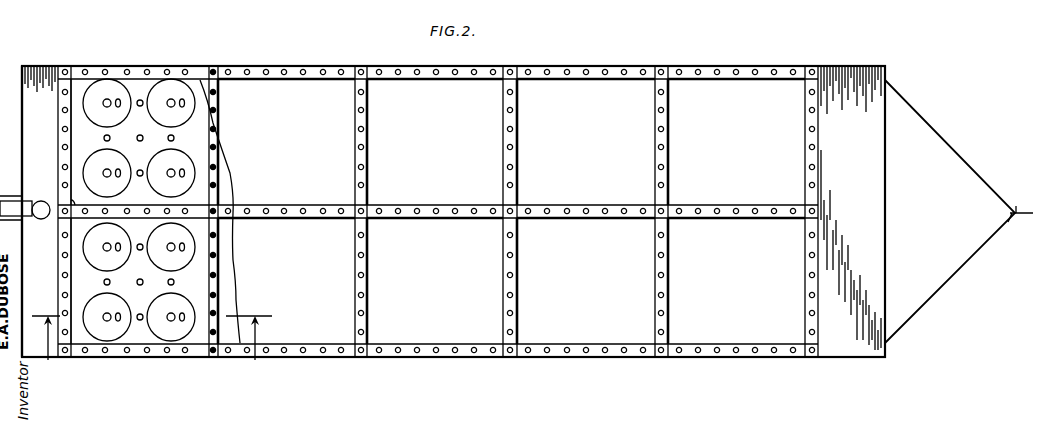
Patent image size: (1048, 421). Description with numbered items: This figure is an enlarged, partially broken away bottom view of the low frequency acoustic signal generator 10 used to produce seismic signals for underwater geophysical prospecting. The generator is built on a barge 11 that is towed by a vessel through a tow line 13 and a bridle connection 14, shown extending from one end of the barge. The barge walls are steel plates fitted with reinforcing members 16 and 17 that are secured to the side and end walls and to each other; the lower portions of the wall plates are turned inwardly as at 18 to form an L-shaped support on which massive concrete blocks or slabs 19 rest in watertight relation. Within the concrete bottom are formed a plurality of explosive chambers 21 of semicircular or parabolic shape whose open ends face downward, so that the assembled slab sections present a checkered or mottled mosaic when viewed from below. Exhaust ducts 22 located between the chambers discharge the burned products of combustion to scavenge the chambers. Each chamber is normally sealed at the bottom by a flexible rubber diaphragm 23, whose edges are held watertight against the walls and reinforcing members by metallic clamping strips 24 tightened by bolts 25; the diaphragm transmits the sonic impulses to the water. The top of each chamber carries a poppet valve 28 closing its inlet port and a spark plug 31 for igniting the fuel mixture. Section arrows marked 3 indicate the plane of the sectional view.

The low frequency acoustic signal generator 10 is at (766, 366).
The barge 11 is at (65, 108).
The tow line 13 is at (1016, 210).
The bridle connection 14 is at (993, 187).
The reinforcing member 16 is at (232, 254).
The reinforcing member 17 is at (75, 200).
The inwardly formed lower portion of wall plates 18 is at (72, 157).
The concrete blocks or slabs 19 is at (191, 78).
The explosive chamber 21 is at (173, 158).
The exhaust duct 22 is at (140, 100).
The flexible diaphragm 23 is at (280, 156).
The metallic clamping strip 24 is at (334, 207).
The bolt 25 is at (358, 110).
The poppet valve 28 is at (104, 172).
The spark plug 31 is at (180, 243).
The section line 3- 3 is at (152, 351).